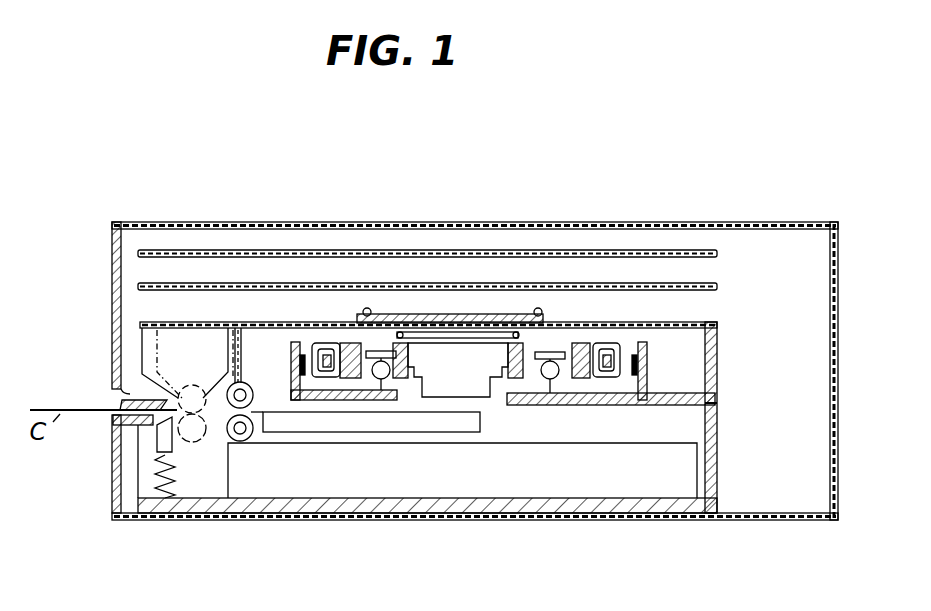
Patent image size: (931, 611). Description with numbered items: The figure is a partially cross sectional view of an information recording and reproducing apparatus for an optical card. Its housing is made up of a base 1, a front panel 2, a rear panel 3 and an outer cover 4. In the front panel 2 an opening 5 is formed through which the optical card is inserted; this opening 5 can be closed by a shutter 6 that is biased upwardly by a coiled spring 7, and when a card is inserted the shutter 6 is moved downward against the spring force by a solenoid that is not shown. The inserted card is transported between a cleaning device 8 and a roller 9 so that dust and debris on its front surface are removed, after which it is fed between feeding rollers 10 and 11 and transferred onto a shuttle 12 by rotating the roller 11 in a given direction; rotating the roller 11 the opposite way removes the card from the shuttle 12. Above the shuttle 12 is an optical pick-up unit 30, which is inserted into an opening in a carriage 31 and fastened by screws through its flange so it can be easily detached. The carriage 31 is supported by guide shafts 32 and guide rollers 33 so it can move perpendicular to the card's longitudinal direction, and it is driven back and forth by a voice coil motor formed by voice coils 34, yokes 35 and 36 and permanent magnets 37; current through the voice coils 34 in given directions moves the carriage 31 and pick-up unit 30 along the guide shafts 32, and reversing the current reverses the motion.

The base 1 is at (448, 519).
The front panel 2 is at (113, 255).
The rear panel 3 is at (838, 337).
The outer cover 4 is at (167, 222).
The opening 5 is at (118, 398).
The shutter 6 is at (150, 450).
The coiled spring 7 is at (173, 462).
The cleaning device 8 is at (156, 357).
The roller 9 is at (197, 442).
The feeding roller 10 is at (247, 383).
The feeding roller 11 is at (243, 443).
The shuttle 12 is at (350, 422).
The optical pick-up unit 30 is at (455, 357).
The carriage 31 is at (535, 313).
The guide shaft 32 is at (383, 378).
The guide roller 33 is at (386, 350).
The voice coil 34 is at (347, 343).
The yoke 35 is at (322, 345).
The yoke 36 is at (290, 345).
The permanent magnet 37 is at (308, 400).